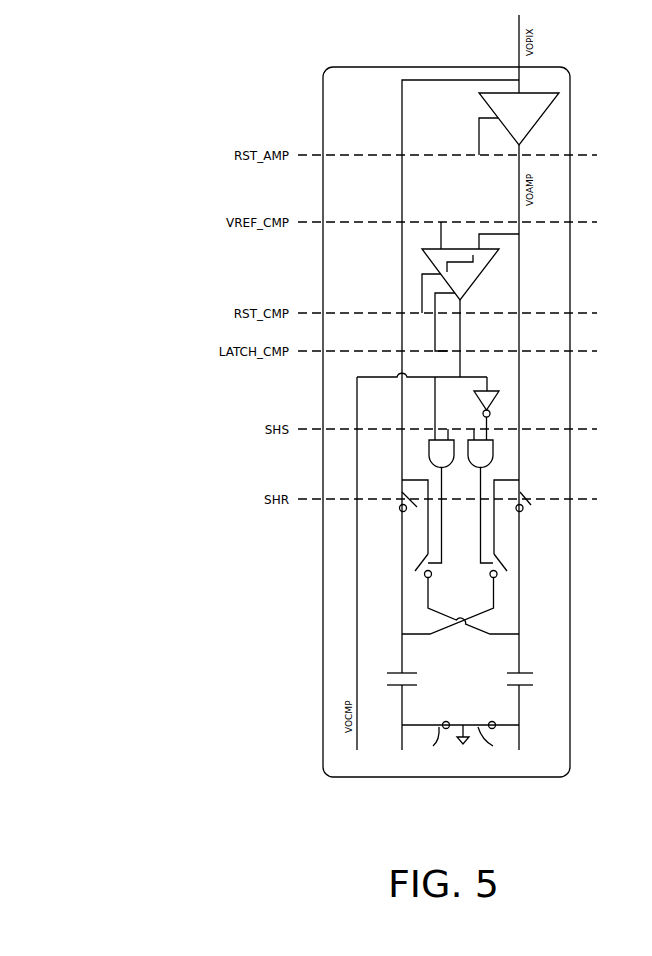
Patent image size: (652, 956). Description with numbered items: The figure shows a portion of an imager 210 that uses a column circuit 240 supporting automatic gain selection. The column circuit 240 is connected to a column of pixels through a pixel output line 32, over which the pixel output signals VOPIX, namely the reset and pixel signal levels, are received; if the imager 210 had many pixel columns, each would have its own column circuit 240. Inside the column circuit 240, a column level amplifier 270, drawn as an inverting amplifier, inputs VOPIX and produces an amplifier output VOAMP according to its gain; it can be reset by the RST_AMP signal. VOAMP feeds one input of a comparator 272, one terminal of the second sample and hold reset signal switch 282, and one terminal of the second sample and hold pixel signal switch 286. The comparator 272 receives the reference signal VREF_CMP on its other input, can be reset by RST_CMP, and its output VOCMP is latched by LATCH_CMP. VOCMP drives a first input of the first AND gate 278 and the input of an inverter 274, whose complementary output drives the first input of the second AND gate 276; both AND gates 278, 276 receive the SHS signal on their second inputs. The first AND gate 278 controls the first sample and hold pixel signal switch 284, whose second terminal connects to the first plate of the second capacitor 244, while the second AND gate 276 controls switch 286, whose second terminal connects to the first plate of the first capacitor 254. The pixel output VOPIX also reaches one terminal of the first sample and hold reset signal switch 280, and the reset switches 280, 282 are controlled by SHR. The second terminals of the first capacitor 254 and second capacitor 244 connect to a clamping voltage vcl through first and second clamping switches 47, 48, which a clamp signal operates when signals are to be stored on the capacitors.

The imager 210 is at (96, 61).
The pixel output line 32 is at (519, 35).
The column level amplifier 270 is at (557, 96).
The comparator 272 is at (430, 257).
The inverter 274 is at (497, 393).
The second AND gate 276 is at (493, 445).
The first AND gate 278 is at (429, 457).
The first sample and hold reset signal switch 280 is at (401, 512).
The second sample and hold reset signal switch 282 is at (524, 511).
The first sample and hold pixel signal switch 284 is at (420, 577).
The second sample and hold pixel signal switch 286 is at (498, 573).
The first capacitor 254 is at (400, 690).
The second capacitor 244 is at (523, 687).
The first clamping switch 47 is at (432, 749).
The second clamping switch 48 is at (497, 749).
The column circuit 240 is at (322, 768).